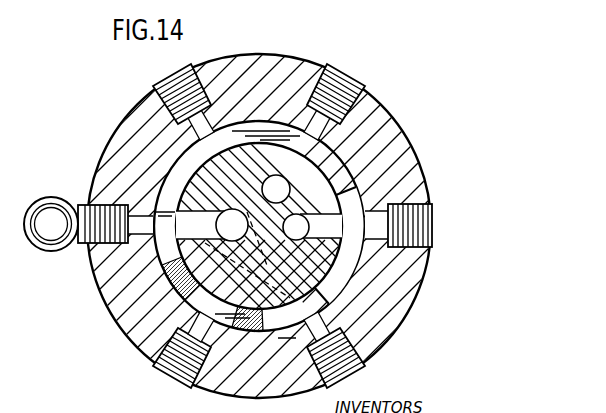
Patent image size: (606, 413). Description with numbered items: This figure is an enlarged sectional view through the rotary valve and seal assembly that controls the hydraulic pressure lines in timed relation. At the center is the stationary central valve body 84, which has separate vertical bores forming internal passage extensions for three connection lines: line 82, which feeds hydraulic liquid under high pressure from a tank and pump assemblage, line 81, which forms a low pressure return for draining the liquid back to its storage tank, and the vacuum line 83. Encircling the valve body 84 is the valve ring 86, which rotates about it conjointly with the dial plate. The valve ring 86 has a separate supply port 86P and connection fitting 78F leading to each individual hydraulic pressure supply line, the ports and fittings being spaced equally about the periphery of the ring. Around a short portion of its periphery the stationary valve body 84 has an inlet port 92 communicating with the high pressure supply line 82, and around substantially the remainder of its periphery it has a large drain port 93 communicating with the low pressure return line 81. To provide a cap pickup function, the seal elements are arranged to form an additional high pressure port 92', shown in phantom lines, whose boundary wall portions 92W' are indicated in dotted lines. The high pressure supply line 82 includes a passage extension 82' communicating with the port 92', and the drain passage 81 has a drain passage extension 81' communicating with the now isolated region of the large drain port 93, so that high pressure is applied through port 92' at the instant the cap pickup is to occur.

The connection fitting 78F is at (45, 203).
The connection line 81 is at (212, 212).
The connection line 82 is at (312, 214).
The connection line 83 is at (283, 183).
The central valve body 84 is at (265, 156).
The valve ring 86 is at (412, 168).
The supply port 86P is at (346, 88).
The drain passage extension 81' is at (265, 270).
The passage extension 82' is at (229, 241).
The inlet port 92 is at (354, 245).
The drain port 93 is at (167, 261).
The boundary wall portions 92W' is at (221, 314).
The additional high pressure port 92' is at (213, 342).